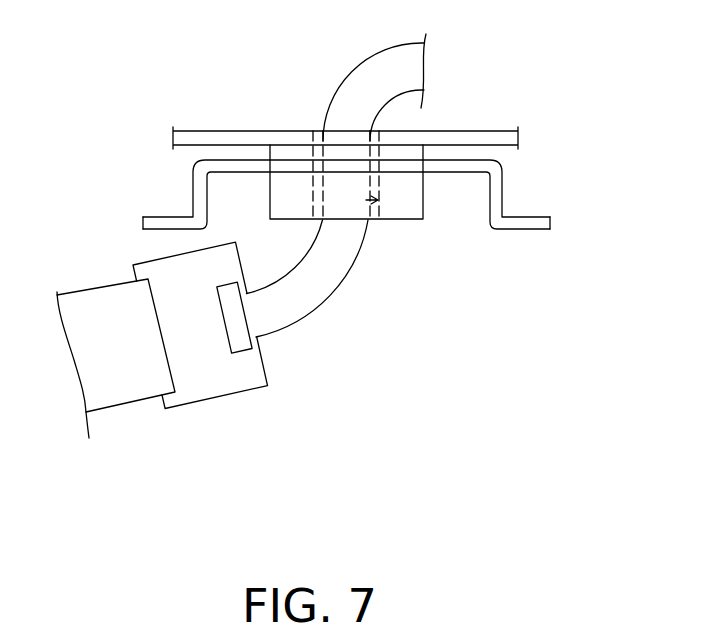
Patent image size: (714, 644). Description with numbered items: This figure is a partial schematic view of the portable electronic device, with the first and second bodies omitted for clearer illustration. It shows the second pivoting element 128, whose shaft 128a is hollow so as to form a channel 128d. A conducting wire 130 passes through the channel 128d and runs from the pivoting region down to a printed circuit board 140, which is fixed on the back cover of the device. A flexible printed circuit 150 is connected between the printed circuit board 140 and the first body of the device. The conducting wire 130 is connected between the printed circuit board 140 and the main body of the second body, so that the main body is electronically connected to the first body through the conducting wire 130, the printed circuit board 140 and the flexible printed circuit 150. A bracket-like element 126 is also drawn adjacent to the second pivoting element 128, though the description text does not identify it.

The bracket 126 is at (550, 223).
The second pivoting element 128 is at (497, 137).
The shaft 128a is at (417, 208).
The channel 128d is at (365, 210).
The conducting wire 130 is at (322, 287).
The printed circuit board 140 is at (210, 390).
The flexible printed circuit 150 is at (118, 395).